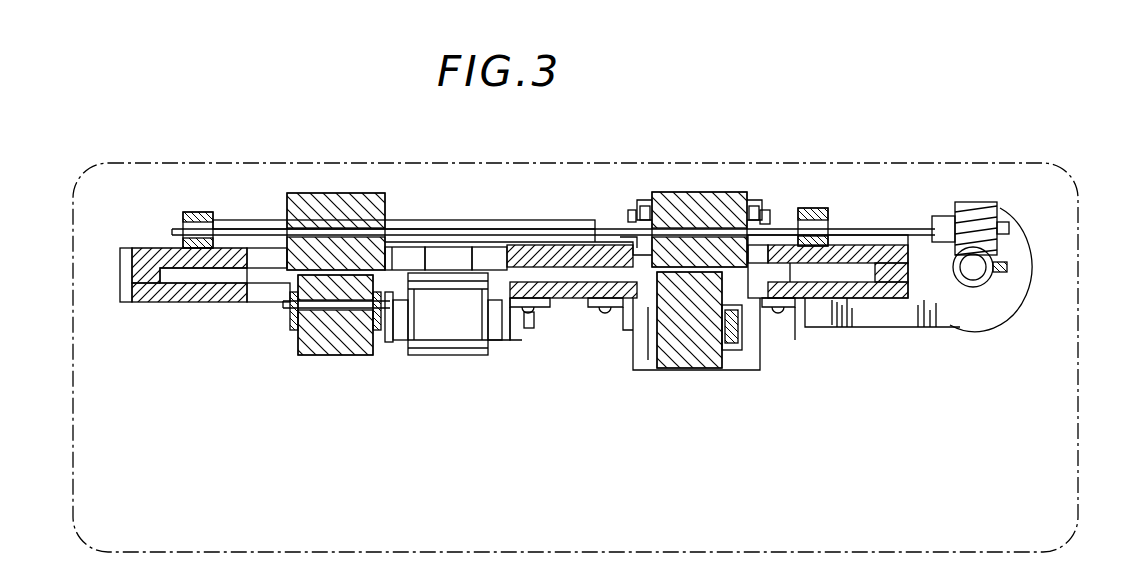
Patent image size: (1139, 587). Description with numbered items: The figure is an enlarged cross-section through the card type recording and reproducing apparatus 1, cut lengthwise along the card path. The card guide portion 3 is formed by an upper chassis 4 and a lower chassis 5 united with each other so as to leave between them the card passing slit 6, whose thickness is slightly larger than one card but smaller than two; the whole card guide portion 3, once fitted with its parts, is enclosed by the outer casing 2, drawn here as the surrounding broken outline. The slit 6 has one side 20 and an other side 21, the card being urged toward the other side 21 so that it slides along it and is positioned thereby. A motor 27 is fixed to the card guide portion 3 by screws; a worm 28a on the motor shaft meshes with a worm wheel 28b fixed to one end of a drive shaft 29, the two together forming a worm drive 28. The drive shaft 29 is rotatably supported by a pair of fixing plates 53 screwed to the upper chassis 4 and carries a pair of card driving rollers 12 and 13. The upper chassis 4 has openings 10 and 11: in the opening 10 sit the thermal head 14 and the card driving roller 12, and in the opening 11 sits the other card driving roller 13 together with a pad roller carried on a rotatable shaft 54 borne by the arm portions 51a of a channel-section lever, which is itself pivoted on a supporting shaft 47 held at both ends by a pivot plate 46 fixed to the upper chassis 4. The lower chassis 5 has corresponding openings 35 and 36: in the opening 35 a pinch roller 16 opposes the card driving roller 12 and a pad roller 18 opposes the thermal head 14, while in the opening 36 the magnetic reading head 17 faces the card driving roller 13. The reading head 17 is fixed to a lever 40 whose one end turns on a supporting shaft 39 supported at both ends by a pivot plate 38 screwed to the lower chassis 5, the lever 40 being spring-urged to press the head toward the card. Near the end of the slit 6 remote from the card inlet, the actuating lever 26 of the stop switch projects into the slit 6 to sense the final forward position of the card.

The card type recording and reproducing apparatus 1 is at (770, 113).
The outer casing 2 is at (566, 163).
The card guide portion 3 is at (128, 243).
The upper chassis 4 is at (140, 250).
The lower chassis 5 is at (150, 300).
The card passing slit 6 is at (565, 290).
The opening 10 is at (255, 247).
The opening 11 is at (637, 240).
The card driving roller 12 is at (335, 200).
The card driving roller 13 is at (705, 200).
The thermal head 14 is at (445, 250).
The pinch roller 16 is at (340, 345).
The magnetic reading head 17 is at (690, 345).
The pad roller 18 is at (450, 345).
The one side of the slit 20 is at (165, 275).
The other side of the slit 21 is at (876, 300).
The actuating lever 26 is at (820, 328).
The motor 27 is at (1046, 272).
The worm drive 28 is at (1003, 243).
The worm 28a is at (975, 288).
The worm wheel 28b is at (984, 215).
The drive shaft 29 is at (492, 224).
The opening 35 is at (250, 292).
The opening 36 is at (780, 308).
The pivot plate 38 is at (645, 355).
The supporting shaft 39 is at (617, 330).
The lever 40 is at (733, 345).
The pivot plate 46 is at (770, 215).
The supporting shaft 47 is at (632, 210).
The arm portions 51a is at (498, 340).
The fixing plates 53 is at (197, 212).
The rotatable shaft 54 is at (290, 305).